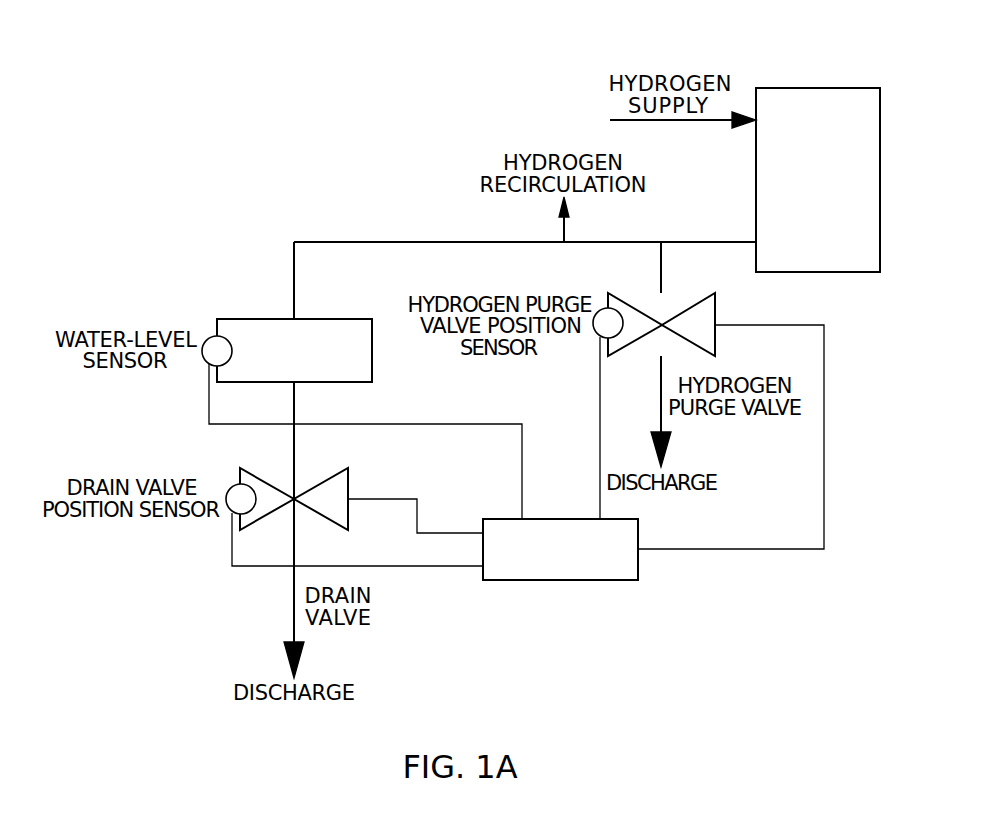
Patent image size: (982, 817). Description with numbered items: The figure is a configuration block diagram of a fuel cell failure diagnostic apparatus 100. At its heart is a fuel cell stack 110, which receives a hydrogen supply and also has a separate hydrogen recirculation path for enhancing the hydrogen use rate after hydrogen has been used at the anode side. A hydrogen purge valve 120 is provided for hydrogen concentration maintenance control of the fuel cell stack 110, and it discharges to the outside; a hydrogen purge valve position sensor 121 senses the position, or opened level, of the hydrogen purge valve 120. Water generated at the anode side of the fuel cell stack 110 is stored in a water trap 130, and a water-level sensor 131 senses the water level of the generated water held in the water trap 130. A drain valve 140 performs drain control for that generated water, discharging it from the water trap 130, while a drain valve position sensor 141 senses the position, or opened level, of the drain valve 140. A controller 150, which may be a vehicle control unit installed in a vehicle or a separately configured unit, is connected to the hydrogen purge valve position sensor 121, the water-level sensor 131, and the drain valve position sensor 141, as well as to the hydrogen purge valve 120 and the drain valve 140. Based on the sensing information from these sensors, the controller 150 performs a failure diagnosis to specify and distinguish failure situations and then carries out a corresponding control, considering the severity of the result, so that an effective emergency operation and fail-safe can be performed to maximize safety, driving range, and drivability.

The fuel cell failure diagnostic apparatus 100 is at (236, 132).
The fuel cell stack 110 is at (756, 192).
The hydrogen purge valve 120 is at (715, 310).
The hydrogen purge valve position sensor 121 is at (605, 327).
The water trap 130 is at (345, 319).
The water-level sensor 131 is at (212, 335).
The drain valve 140 is at (350, 481).
The drain valve position sensor 141 is at (238, 491).
The controller 150 is at (640, 570).